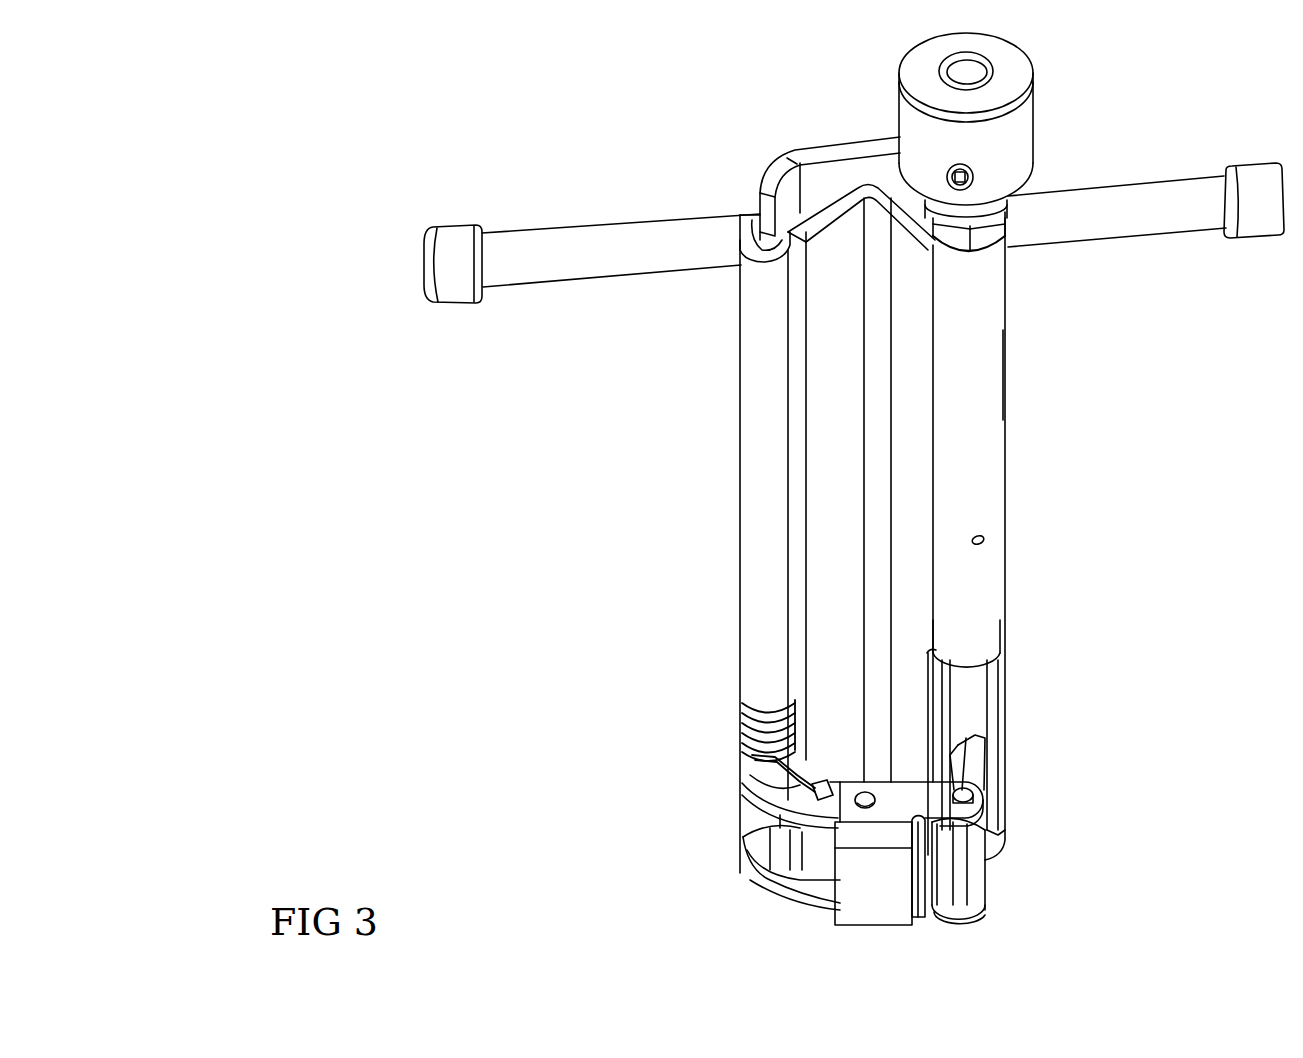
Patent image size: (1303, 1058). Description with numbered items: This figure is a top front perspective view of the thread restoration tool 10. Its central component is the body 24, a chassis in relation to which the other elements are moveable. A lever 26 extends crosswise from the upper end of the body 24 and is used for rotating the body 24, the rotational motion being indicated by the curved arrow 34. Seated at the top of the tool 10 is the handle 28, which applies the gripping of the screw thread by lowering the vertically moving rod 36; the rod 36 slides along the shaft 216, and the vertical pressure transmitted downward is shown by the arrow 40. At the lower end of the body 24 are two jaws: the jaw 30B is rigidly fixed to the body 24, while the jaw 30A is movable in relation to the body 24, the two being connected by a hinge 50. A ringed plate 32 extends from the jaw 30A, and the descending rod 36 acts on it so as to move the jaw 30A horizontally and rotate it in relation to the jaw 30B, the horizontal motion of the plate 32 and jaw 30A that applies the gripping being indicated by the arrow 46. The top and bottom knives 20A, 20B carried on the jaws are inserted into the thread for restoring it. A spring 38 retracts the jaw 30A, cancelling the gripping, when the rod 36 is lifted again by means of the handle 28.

The thread restoration tool 10 is at (287, 462).
The body 24 is at (828, 451).
The lever 26 is at (1168, 207).
The handle 28 is at (1010, 140).
The rotational motion 34 is at (876, 92).
The shaft 216 is at (980, 382).
The vertical pressure 40 is at (1040, 480).
The vertically moving rod 36 is at (973, 695).
The plate 32 is at (970, 772).
The horizontal motion 46 is at (1148, 777).
The jaw 30A is at (870, 882).
The jaw 30B is at (882, 767).
The spring 38 is at (750, 738).
The hinge 50 is at (755, 768).
The top knife 20A is at (763, 828).
The bottom knife 20B is at (790, 877).